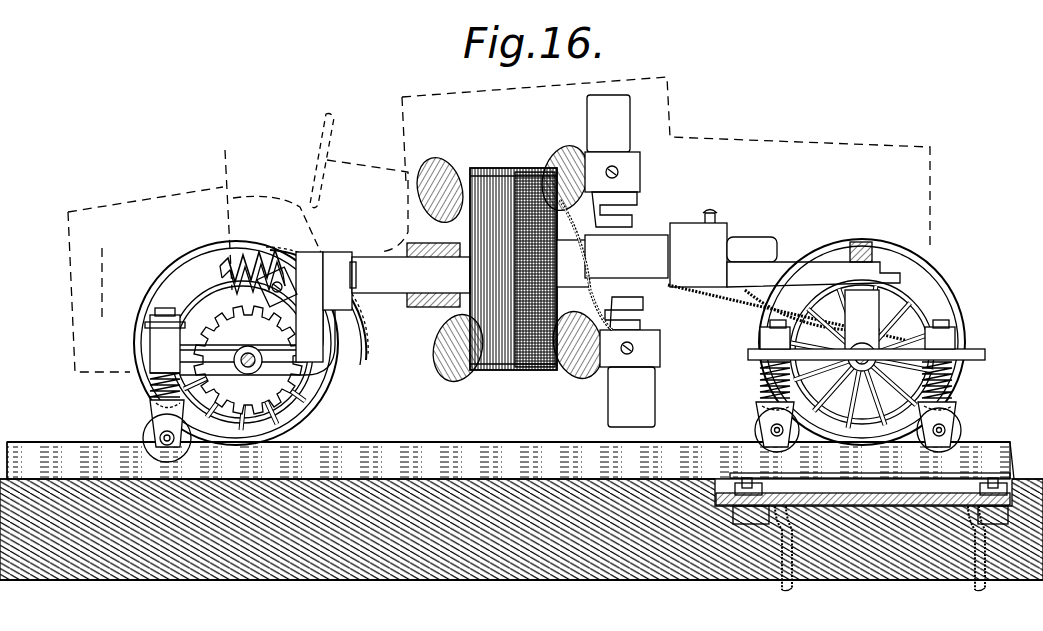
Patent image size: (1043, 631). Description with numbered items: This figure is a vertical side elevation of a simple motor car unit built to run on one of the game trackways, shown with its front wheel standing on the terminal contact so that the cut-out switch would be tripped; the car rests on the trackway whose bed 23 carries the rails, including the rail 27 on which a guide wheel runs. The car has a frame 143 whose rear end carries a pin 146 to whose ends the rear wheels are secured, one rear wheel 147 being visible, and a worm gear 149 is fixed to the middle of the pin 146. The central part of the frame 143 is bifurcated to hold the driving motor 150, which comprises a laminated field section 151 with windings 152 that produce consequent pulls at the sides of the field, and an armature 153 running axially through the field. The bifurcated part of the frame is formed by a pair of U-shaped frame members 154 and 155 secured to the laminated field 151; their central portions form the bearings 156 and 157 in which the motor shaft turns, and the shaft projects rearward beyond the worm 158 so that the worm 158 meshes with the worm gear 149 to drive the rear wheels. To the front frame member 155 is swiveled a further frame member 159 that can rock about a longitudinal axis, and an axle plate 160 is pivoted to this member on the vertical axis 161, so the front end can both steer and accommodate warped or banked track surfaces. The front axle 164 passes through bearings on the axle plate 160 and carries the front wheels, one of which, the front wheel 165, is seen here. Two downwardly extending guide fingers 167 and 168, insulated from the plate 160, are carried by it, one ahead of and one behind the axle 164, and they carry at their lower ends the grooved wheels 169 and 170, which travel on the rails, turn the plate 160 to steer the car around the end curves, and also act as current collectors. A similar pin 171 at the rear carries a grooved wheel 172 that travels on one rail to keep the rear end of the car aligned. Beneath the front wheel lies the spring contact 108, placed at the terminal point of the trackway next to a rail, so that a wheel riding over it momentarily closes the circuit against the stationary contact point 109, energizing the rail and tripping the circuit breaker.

The floor slab 23 is at (423, 588).
The rail 27 is at (510, 460).
The spring contact 108 is at (842, 492).
The stationary contact point 109 is at (763, 470).
The frame 143 is at (381, 247).
The pin 146 is at (262, 360).
The rear wheel 147 is at (368, 354).
The worm gear 149 is at (251, 343).
The driving motor 150 is at (505, 380).
The laminated field section 151 is at (540, 372).
The windings 152 is at (450, 162).
The armature 153 is at (422, 243).
The U-shaped frame member 154 is at (395, 293).
The U-shaped frame member 155 is at (636, 246).
The bearing 156 is at (345, 250).
The bearing 157 is at (698, 242).
The worm 158 is at (233, 260).
The frame member 159 is at (821, 238).
The axle plate 160 is at (985, 354).
The vertical axis 161 is at (862, 242).
The front axle 164 is at (912, 300).
The front wheel 165 is at (912, 258).
The guide finger 167 is at (955, 402).
The guide finger 168 is at (760, 402).
The grooved wheel 169 is at (958, 428).
The grooved wheel 170 is at (755, 428).
The pin 171 is at (152, 407).
The grooved wheel 172 is at (146, 437).